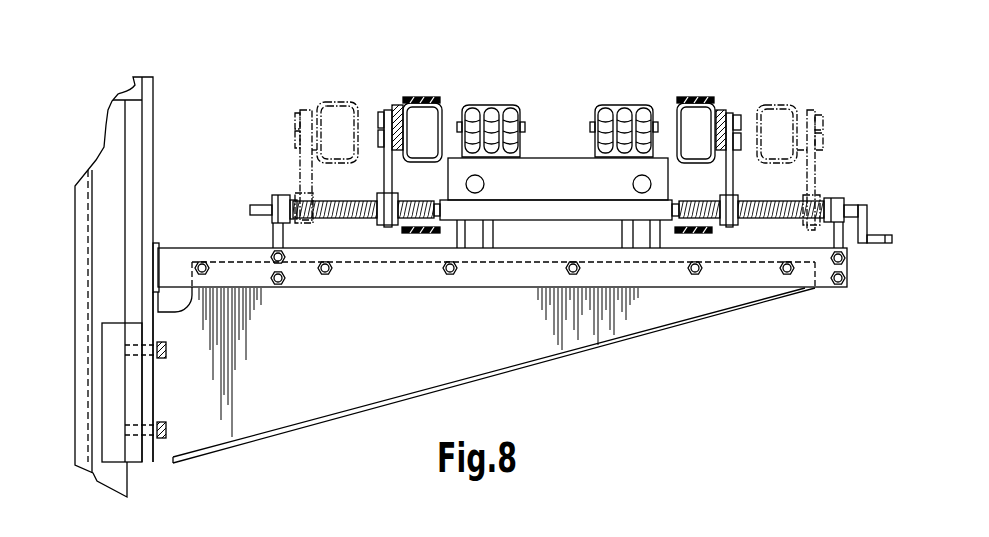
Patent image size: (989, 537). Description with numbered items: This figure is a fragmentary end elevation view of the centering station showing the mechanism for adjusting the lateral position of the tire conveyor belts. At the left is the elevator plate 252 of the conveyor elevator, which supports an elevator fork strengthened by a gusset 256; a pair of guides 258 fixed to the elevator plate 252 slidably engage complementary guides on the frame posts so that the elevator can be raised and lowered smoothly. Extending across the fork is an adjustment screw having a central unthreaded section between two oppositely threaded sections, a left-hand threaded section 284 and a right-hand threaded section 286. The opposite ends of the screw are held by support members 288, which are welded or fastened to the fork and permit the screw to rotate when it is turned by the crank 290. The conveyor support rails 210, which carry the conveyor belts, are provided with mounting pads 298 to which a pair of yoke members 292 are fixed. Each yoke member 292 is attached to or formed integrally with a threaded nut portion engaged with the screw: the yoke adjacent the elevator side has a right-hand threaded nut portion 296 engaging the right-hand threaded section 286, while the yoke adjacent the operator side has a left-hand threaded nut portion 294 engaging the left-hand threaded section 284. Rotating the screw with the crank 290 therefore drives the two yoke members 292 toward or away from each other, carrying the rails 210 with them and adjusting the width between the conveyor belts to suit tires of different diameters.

The support rail 210 is at (423, 118).
The elevator plate 252 is at (148, 128).
The gusset 256 is at (173, 265).
The guide 258 is at (133, 405).
The left-hand threaded screw section 284 is at (767, 210).
The right-hand threaded screw section 286 is at (357, 212).
The support member 288 is at (282, 195).
The crank 290 is at (877, 238).
The yoke member 292 is at (387, 177).
The left-hand threaded nut portion 294 is at (732, 223).
The right-hand threaded nut portion 296 is at (392, 223).
The mounting pad 298 is at (395, 107).